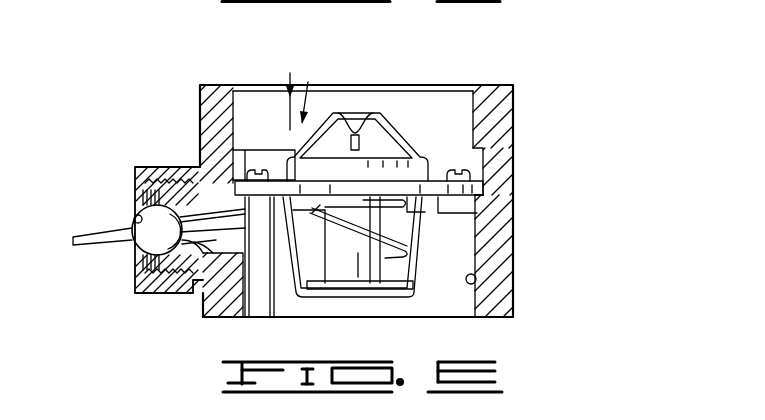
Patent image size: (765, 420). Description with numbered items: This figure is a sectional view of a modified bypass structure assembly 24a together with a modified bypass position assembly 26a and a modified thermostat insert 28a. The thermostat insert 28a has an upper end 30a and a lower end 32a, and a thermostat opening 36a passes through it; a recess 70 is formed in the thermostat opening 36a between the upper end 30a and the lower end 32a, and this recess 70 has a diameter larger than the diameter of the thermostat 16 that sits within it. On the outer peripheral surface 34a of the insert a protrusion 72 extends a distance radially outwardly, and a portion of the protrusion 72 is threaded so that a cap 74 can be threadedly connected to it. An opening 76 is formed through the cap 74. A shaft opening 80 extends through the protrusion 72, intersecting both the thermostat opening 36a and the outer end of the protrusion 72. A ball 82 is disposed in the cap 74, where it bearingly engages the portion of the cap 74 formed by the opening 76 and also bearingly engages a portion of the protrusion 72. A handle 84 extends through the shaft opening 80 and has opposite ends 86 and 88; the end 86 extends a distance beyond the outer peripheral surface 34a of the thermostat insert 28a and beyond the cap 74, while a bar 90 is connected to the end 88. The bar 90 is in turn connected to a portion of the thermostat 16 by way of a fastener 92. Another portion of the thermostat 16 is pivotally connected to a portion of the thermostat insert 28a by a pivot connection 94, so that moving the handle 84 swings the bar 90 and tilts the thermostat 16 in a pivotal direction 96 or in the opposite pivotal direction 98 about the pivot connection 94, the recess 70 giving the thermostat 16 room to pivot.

The thermostat 16 is at (373, 92).
The bypass structure assembly 24a is at (522, 186).
The bypass position assembly 26a is at (128, 190).
The thermostat insert 28a is at (496, 118).
The upper end 30a is at (512, 84).
The lower end 32a is at (499, 318).
The outer peripheral surface 34a is at (516, 238).
The thermostat opening 36a is at (477, 278).
The recess 70 is at (250, 152).
The protrusion 72 is at (166, 294).
The cap 74 is at (160, 178).
The opening 76 is at (134, 216).
The shaft opening 80 is at (212, 320).
The ball 82 is at (140, 252).
The handle 84 is at (95, 244).
The end 86 is at (72, 240).
The end 88 is at (246, 248).
The bar 90 is at (273, 222).
The fastener 92 is at (225, 172).
The pivot connection 94 is at (470, 212).
The pivotal direction 96 is at (289, 86).
The opposite pivotal direction 98 is at (306, 92).